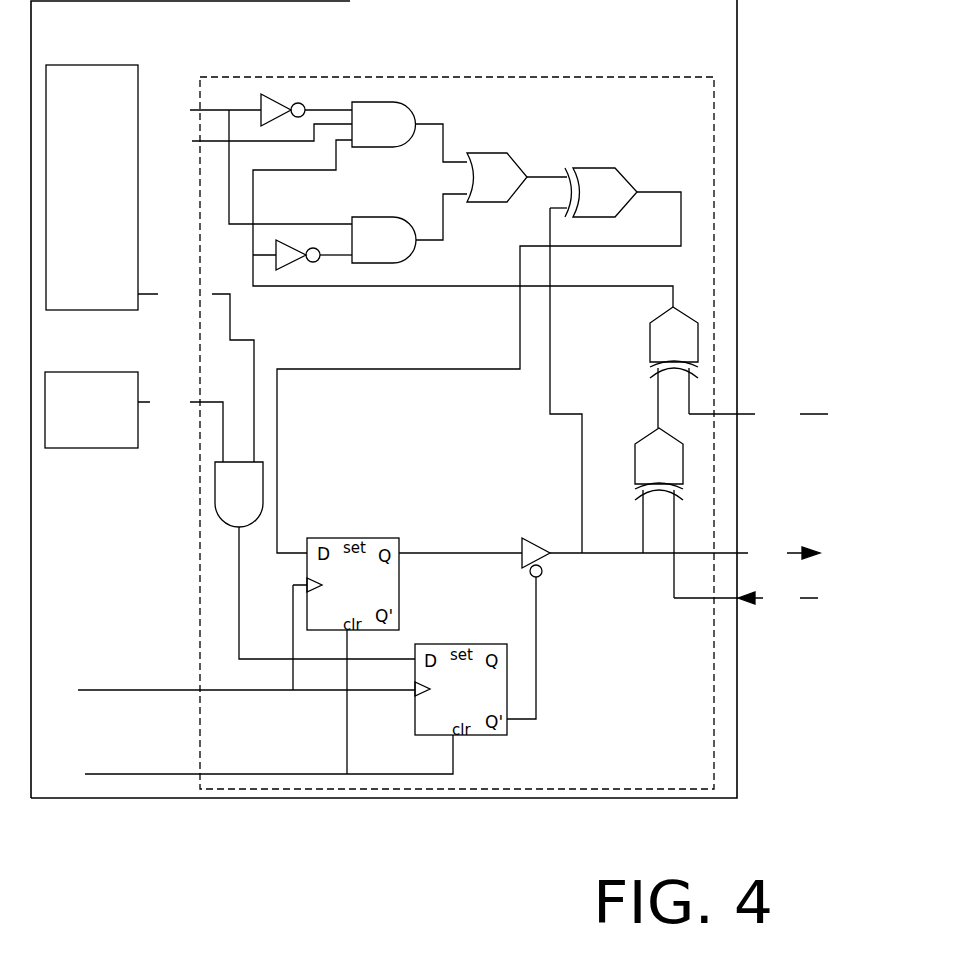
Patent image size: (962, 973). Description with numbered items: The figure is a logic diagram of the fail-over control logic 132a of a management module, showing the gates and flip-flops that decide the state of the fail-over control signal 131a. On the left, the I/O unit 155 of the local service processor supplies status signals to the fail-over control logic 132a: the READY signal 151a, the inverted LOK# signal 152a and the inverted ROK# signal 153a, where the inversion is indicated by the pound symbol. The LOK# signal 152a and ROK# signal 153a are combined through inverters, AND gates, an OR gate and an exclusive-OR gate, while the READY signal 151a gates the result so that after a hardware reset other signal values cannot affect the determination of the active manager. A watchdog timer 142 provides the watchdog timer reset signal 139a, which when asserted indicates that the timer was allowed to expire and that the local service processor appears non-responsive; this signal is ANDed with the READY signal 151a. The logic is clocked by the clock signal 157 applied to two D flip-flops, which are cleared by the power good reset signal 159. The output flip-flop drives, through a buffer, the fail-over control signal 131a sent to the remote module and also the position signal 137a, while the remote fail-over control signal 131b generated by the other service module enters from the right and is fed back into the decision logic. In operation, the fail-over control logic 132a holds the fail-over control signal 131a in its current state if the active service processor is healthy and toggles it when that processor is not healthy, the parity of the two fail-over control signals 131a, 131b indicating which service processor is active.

The fail-over control logic (FOCL) 132a is at (703, 775).
The I/O unit 155 is at (103, 210).
The watchdog timer (WT) 142 is at (104, 435).
The LOK# signal 152a is at (139, 108).
The ROK# signal 153a is at (139, 141).
The READY signal 151a is at (143, 294).
The watchdog timer reset signal 139a is at (145, 403).
The clock signal (CLK) 157 is at (127, 689).
The power good reset signal (RST#) 159 is at (118, 773).
The position signal 137a is at (812, 416).
The fail-over control signal (FOC 0) 131a is at (787, 551).
The fail-over control signal (FOC 1) 131b is at (815, 600).